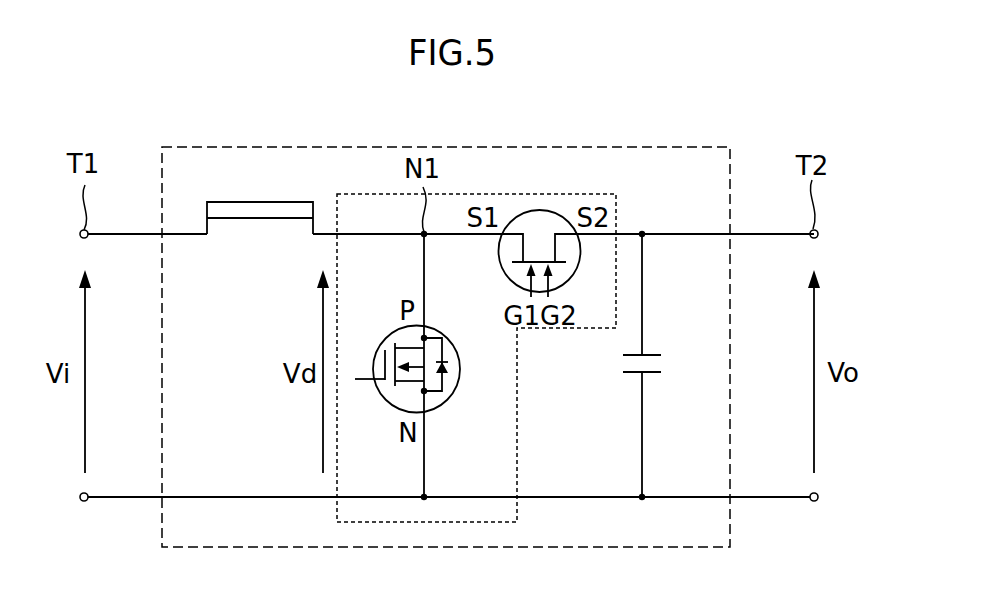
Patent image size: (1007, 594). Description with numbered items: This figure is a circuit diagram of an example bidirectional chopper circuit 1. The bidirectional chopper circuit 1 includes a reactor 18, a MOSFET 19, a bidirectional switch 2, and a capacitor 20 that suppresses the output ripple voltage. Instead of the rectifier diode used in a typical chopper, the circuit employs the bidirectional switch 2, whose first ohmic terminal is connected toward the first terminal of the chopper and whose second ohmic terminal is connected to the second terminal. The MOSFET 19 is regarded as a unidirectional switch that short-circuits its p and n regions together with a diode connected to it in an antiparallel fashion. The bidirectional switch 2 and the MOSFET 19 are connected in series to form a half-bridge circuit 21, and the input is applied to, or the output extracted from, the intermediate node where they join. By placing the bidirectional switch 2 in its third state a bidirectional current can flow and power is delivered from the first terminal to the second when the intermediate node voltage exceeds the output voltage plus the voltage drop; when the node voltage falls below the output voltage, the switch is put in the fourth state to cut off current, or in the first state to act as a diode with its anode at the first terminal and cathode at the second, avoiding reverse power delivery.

The bidirectional chopper circuit 1 is at (693, 147).
The bidirectional switch 2 is at (540, 210).
The reactor 18 is at (306, 202).
The MOSFET 19 is at (381, 403).
The capacitor 20 is at (632, 375).
The half-bridge circuit 21 is at (577, 194).